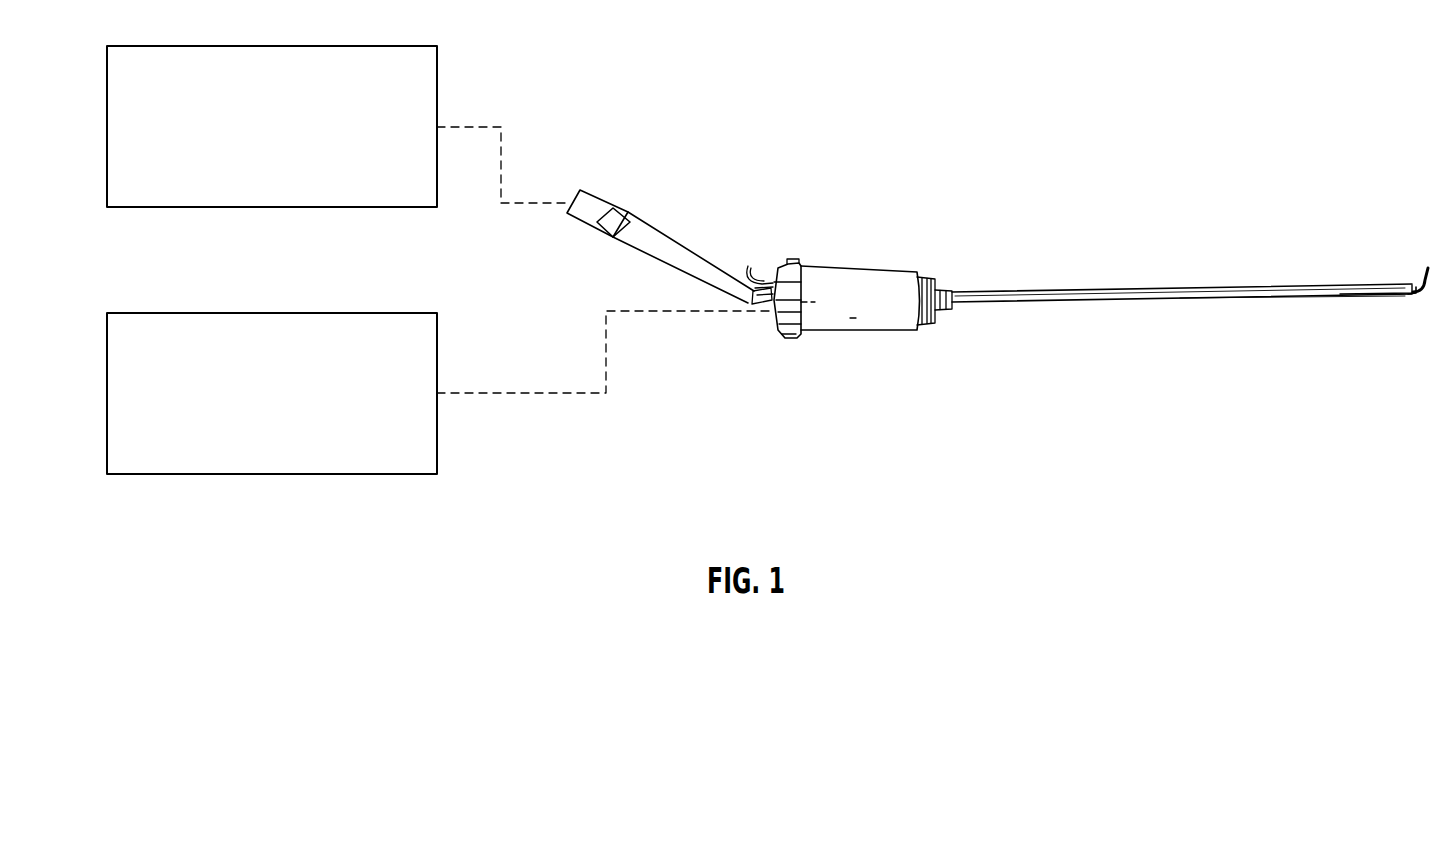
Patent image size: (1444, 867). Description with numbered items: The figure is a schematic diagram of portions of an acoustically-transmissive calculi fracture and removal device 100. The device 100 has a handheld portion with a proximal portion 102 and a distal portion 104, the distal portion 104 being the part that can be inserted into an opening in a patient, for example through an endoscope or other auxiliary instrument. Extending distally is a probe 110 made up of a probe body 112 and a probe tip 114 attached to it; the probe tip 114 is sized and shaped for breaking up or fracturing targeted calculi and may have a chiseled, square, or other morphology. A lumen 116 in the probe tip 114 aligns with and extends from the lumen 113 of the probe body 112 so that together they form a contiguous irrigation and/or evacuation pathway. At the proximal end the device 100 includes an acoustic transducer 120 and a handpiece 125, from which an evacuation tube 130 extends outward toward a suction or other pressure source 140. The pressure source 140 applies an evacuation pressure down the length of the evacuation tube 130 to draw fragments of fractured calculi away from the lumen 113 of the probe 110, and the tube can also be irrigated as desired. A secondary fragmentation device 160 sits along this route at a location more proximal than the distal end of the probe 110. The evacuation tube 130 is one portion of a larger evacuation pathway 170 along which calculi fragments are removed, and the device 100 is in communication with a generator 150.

The calculi fracture and removal device 100 is at (1216, 120).
The proximal portion 102 is at (866, 220).
The distal portion 104 is at (1347, 232).
The probe 110 is at (1415, 330).
The probe body 112 is at (1228, 298).
The lumen of the probe body 113 is at (1000, 292).
The probe tip 114 is at (1350, 294).
The lumen of the probe tip 116 is at (1370, 288).
The acoustic transducer 120 is at (905, 275).
The handpiece 125 is at (827, 273).
The evacuation tube 130 is at (686, 247).
The pressure source 140 is at (293, 406).
The generator 150 is at (293, 140).
The secondary fragmentation device 160 is at (612, 208).
The evacuation pathway 170 is at (1432, 436).